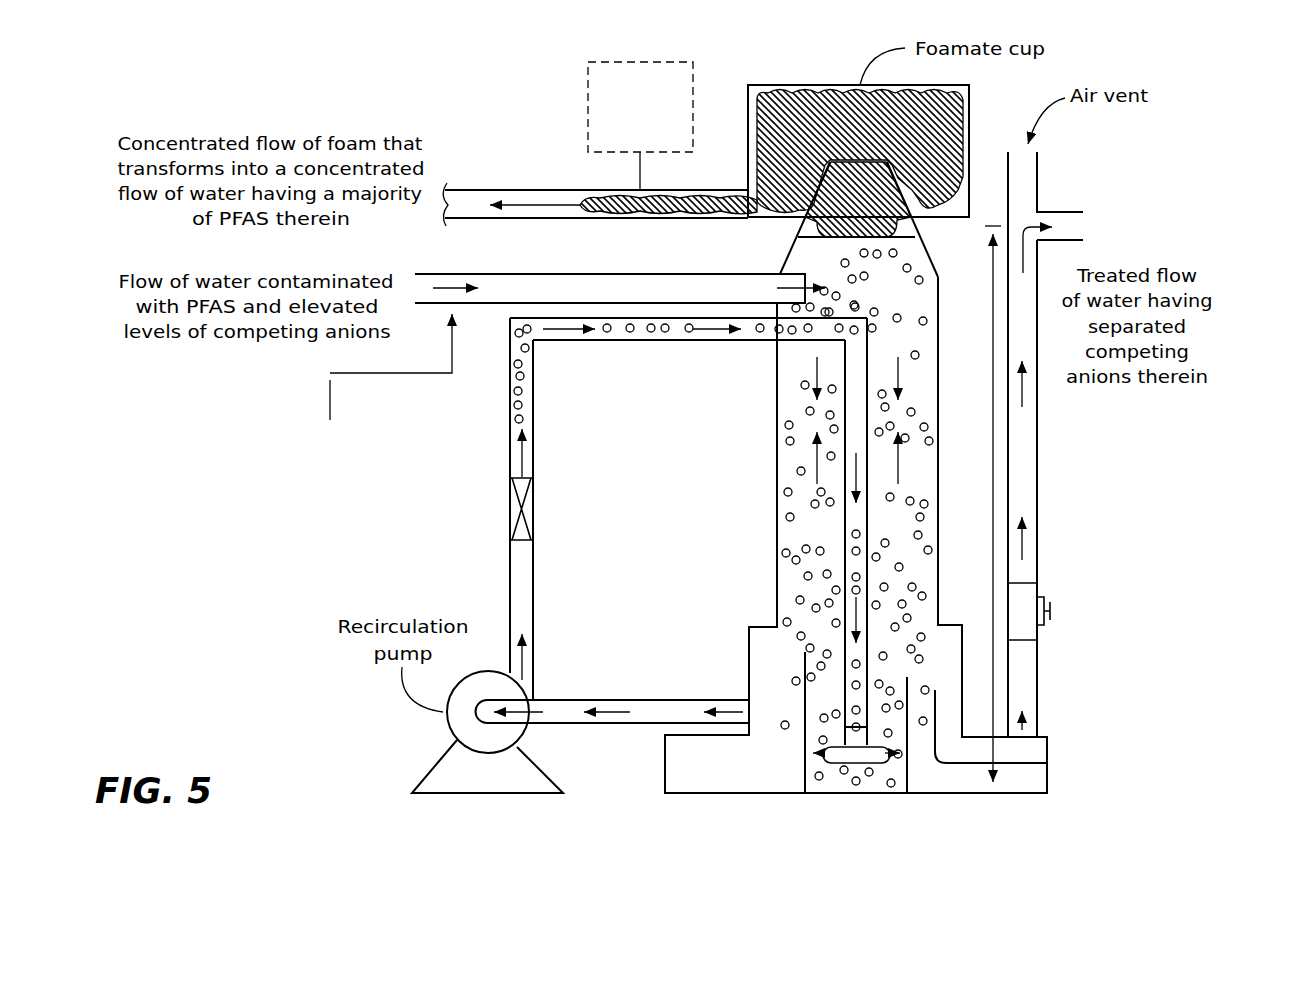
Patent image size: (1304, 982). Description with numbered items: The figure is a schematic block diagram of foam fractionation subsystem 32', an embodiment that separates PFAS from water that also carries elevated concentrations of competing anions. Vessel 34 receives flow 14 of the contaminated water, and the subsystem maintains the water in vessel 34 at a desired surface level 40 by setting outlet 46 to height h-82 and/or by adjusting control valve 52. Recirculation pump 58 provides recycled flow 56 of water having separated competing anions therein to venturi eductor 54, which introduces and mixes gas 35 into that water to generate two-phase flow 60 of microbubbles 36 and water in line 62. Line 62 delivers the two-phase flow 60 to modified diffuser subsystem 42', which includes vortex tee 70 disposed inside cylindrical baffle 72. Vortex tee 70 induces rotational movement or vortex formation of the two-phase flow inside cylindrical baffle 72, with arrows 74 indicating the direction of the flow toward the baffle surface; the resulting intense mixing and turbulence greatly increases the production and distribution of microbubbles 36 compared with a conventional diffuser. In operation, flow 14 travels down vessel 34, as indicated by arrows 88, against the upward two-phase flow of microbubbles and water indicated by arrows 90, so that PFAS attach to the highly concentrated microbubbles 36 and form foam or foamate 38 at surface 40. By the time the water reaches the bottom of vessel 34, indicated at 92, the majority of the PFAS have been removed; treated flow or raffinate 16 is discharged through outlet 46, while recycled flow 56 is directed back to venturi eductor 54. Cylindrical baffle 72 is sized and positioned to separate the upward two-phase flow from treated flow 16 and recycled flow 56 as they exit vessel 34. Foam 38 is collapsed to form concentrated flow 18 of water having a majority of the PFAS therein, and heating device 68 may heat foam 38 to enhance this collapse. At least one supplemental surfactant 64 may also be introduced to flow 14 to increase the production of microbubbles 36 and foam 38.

The foam fractionation subsystem 32' is at (856, 413).
The foam or foamate 38 is at (818, 88).
The heating device 68 is at (653, 141).
The concentrated flow of water having a majority of the PFAS therein 18 is at (511, 191).
The flow of water contaminated with PFAS and elevated concentrations of competing an 14 is at (462, 275).
The surface level 40 is at (800, 239).
The microbubbles 36 is at (533, 382).
The treated flow or raffinate of water having separated competing anions therein 16 is at (1057, 225).
The outlet 46 is at (1083, 226).
The arrows indicating downward travel of flow 88 is at (777, 372).
The arrows indicating upward two-phase flow 90 is at (777, 456).
The line 62 is at (577, 345).
The two-phase flow 60 is at (510, 455).
The venturi eductor 54 is at (533, 540).
The gas 35 is at (497, 528).
The supplemental surfactant 64 is at (355, 406).
The vessel 34 is at (777, 518).
The recycled flow of water having separated competing anions therein 56 is at (608, 700).
The recirculation pump 58 is at (527, 727).
The bottom of vessel 92 is at (743, 683).
The modified diffuser subsystem 42' is at (780, 675).
The cylindrical baffle 72 is at (805, 768).
The arrows indicating direction of two-phase flow 74 is at (820, 757).
The vortex tee 70 is at (853, 760).
The height h 82 is at (995, 478).
The control valve 52 is at (1055, 607).